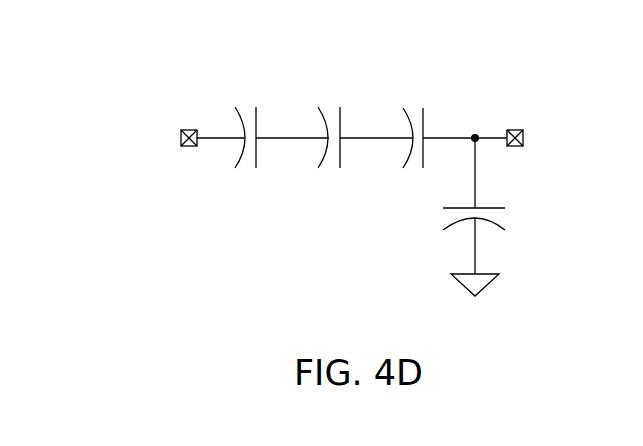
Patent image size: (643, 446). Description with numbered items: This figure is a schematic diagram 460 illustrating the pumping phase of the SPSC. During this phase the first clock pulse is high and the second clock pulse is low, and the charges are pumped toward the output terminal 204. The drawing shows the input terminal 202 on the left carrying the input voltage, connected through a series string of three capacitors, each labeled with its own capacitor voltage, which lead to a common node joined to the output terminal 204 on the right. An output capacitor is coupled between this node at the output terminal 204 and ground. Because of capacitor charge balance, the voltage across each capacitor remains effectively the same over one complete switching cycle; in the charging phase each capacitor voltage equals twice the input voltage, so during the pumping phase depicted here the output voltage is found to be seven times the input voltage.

The schematic diagram 460 is at (134, 52).
The input terminal 202 is at (181, 138).
The output terminal 204 is at (523, 138).